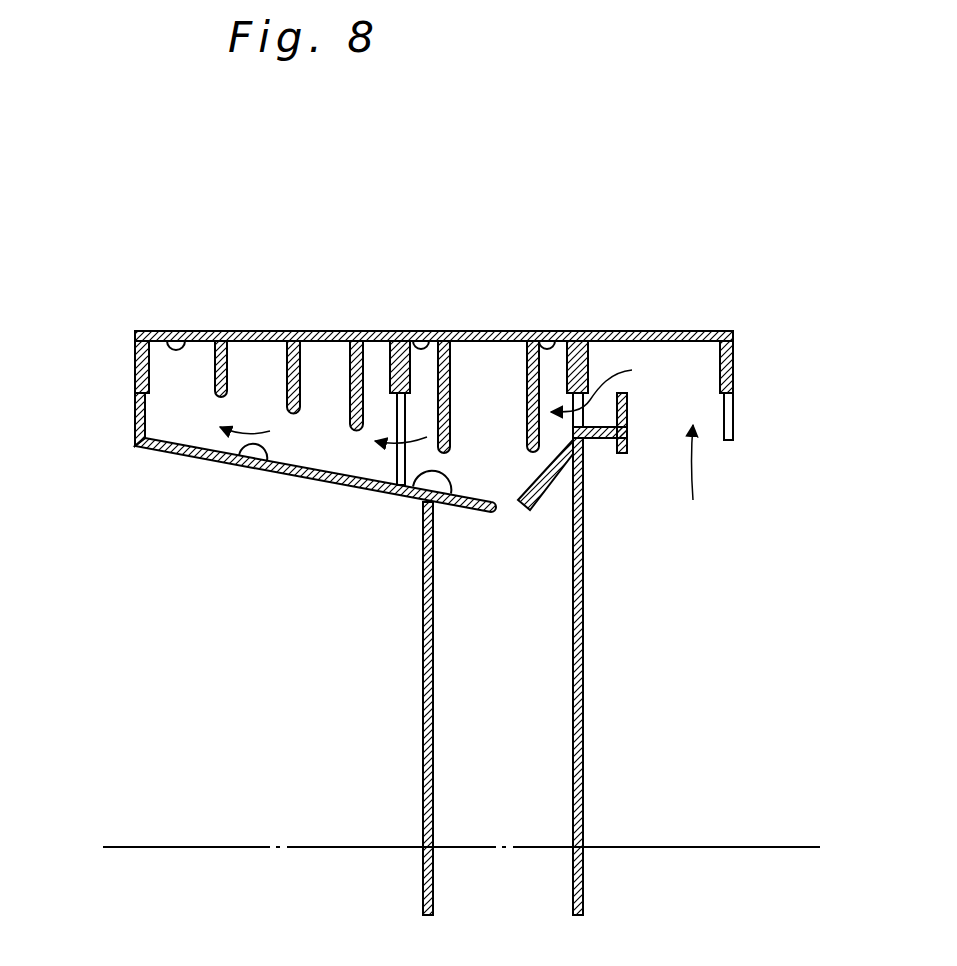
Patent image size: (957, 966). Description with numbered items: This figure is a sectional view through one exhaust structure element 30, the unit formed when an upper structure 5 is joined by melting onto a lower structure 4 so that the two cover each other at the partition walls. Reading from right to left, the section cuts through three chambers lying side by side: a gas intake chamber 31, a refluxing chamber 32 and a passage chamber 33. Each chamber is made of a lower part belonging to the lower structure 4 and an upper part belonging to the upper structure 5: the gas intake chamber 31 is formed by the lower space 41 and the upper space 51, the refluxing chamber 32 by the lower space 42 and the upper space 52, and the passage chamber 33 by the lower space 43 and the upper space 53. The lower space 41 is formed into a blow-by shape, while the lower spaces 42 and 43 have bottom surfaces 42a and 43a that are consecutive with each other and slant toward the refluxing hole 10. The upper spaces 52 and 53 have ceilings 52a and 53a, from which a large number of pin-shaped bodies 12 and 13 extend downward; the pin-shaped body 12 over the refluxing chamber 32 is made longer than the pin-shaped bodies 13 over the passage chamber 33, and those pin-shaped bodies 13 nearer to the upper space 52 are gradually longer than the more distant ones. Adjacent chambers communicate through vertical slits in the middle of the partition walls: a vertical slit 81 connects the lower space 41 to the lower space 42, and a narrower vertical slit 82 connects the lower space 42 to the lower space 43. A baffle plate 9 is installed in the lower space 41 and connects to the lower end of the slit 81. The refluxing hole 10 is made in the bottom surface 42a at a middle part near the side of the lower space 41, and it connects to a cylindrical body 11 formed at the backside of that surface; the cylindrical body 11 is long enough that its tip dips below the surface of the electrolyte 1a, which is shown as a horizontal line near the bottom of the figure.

The exhaust structure element 30 is at (128, 300).
The pin-shaped body 13 is at (290, 363).
The upper structure 5 is at (128, 362).
The lower structure 4 is at (128, 427).
The ceiling 53a is at (165, 333).
The passage chamber 33 is at (393, 217).
The upper space 53 is at (315, 363).
The lower space 43 is at (323, 447).
The ceiling 52a is at (417, 343).
The vertical slit 82 is at (396, 470).
The refluxing chamber 32 is at (538, 217).
The upper space 52 is at (475, 360).
The lower space 42 is at (485, 473).
The pin-shaped body 12 is at (557, 345).
The gas intake chamber 31 is at (692, 217).
The upper space 51 is at (630, 370).
The baffle plate 9 is at (640, 437).
The vertical slit 81 is at (603, 445).
The lower space 41 is at (660, 422).
The refluxing hole 10 is at (503, 513).
The bottom surface 43a is at (230, 460).
The bottom surface 42a is at (418, 487).
The cylindrical body 11 is at (583, 702).
The surface of the electrolyte 1a is at (305, 847).